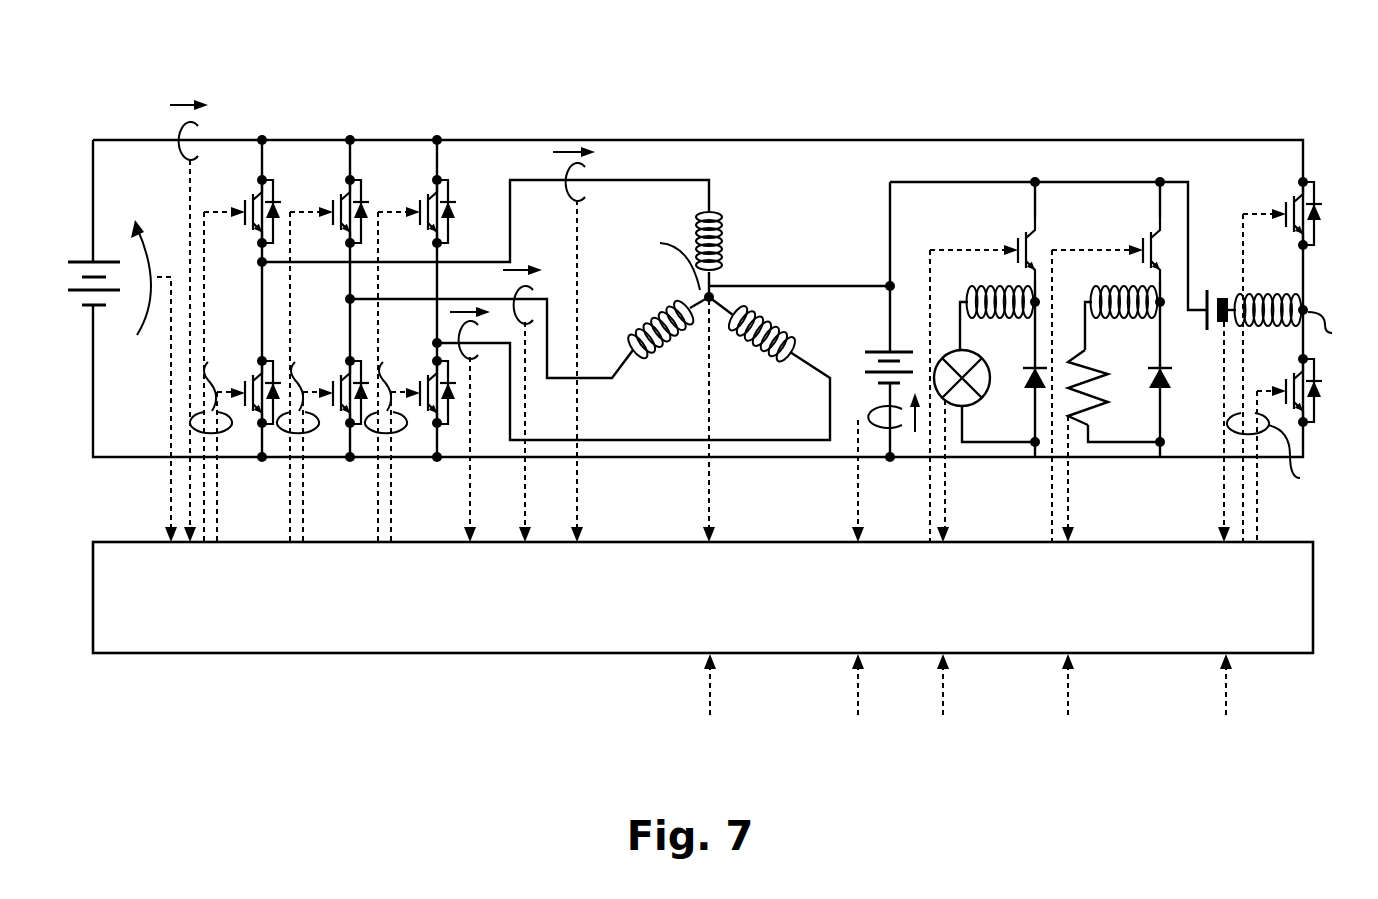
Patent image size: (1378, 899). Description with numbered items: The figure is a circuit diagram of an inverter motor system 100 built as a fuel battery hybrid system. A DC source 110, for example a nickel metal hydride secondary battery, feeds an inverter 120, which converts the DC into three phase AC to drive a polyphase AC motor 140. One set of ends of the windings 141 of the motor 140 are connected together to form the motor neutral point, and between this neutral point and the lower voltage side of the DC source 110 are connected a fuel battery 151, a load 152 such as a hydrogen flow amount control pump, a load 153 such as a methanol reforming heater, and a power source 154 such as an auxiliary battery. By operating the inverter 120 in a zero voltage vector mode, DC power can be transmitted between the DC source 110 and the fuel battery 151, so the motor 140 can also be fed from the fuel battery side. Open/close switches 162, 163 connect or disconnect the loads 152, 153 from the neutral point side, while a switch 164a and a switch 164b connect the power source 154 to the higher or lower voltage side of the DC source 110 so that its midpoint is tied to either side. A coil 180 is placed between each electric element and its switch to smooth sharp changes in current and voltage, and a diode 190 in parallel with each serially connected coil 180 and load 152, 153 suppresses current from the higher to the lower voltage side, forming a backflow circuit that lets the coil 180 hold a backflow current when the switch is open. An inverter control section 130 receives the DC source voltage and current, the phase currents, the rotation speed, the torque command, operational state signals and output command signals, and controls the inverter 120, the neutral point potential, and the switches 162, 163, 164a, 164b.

The inverter motor system 100 is at (546, 75).
The DC source 110 is at (72, 212).
The inverter 120 is at (237, 125).
The inverter control section 130 is at (93, 565).
The polyphase AC motor 140 is at (703, 112).
The windings 141 is at (722, 228).
The fuel battery 151 is at (855, 345).
The load 152 is at (952, 350).
The load 153 is at (1085, 346).
The power source 154 is at (1216, 275).
The open/close switch 162 is at (1008, 228).
The open/close switch 163 is at (1133, 228).
The switch 164a is at (1273, 193).
The switch 164b is at (1273, 373).
The coil 180 is at (1000, 320).
The diode 190 is at (1030, 388).